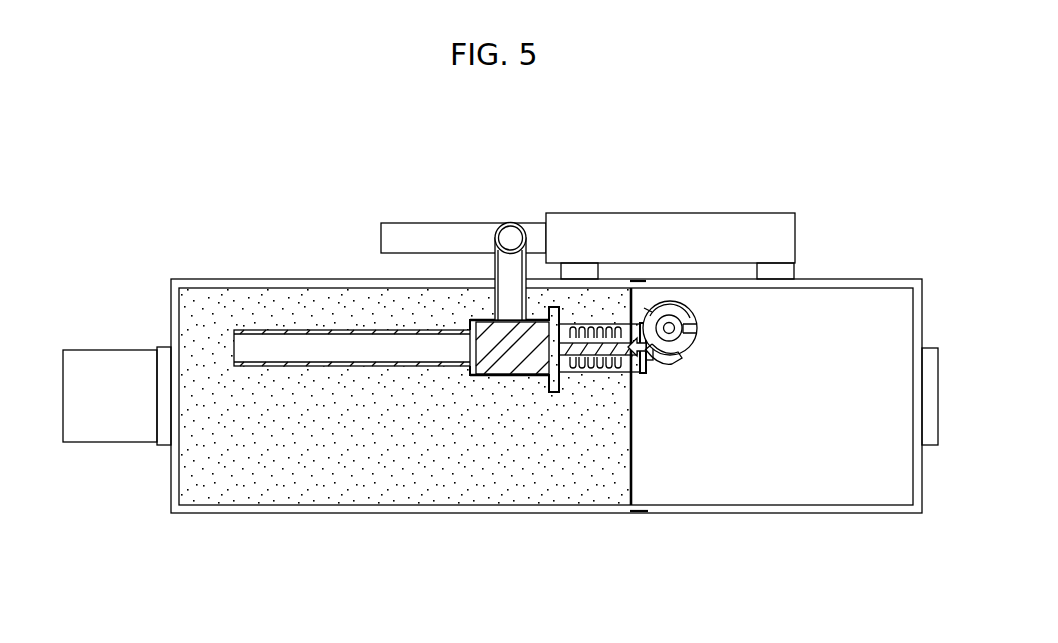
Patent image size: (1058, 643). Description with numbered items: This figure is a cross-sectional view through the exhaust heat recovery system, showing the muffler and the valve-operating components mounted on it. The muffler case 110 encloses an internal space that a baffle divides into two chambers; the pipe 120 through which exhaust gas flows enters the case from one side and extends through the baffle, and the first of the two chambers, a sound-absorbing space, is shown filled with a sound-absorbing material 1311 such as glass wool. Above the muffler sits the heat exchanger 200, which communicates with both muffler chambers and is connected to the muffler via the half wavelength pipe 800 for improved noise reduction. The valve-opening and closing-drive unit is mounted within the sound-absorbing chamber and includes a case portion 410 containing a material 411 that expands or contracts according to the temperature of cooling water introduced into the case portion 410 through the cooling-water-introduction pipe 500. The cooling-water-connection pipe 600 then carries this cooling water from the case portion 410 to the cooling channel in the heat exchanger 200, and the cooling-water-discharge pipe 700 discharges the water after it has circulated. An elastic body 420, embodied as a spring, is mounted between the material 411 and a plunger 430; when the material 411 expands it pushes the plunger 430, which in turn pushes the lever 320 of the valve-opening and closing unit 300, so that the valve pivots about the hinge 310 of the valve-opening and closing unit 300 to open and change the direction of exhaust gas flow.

The muffler case 110 is at (233, 510).
The pipe 120 is at (108, 372).
The sound-absorbing material 1311 is at (330, 490).
The heat exchanger 200 is at (591, 230).
The valve-opening and closing unit 300 is at (682, 303).
The cam shaft 310 is at (668, 320).
The lever 320 is at (685, 350).
The case portion 410 is at (470, 378).
The material 411 is at (532, 355).
The elastic body 420 is at (598, 362).
The plunger 430 is at (642, 376).
The cooling-water-introduction pipe 500 is at (267, 350).
The cooling-water-connection pipe 600 is at (509, 268).
The cooling-water-discharge pipe 700 is at (428, 232).
The half wavelength pipe 800 is at (773, 272).